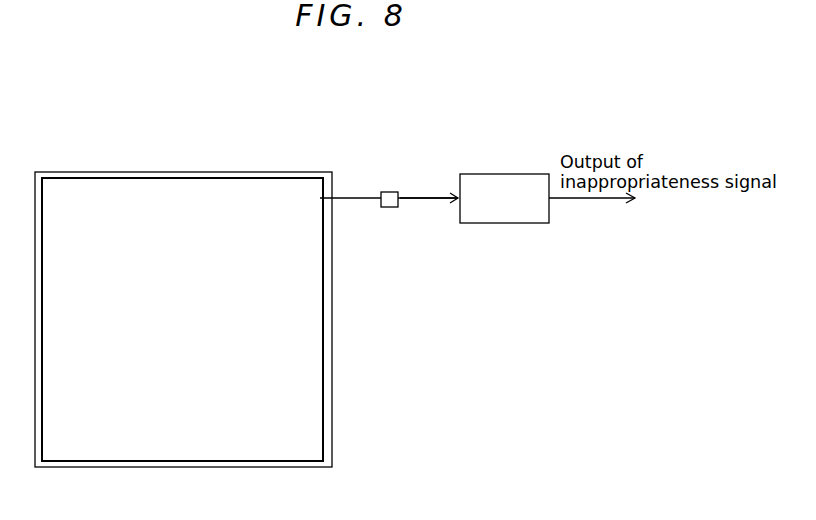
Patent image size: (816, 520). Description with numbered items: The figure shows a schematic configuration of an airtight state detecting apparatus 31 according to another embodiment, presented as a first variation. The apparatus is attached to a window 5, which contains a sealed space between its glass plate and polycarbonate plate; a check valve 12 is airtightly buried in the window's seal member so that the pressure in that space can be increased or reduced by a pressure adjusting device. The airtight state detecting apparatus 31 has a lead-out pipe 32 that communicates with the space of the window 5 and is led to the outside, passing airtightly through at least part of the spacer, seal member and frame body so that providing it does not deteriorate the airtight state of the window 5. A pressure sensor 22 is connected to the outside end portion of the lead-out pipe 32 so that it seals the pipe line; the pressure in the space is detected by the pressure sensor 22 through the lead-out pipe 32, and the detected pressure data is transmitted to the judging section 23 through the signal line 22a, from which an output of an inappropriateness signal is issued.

The window 5 is at (153, 148).
The check valve 12 is at (262, 173).
The pressure sensor 22 is at (389, 192).
The signal line 22a is at (427, 198).
The judging section 23 is at (505, 223).
The airtight state detecting apparatus 31 is at (577, 265).
The lead-out pipe 32 is at (356, 198).